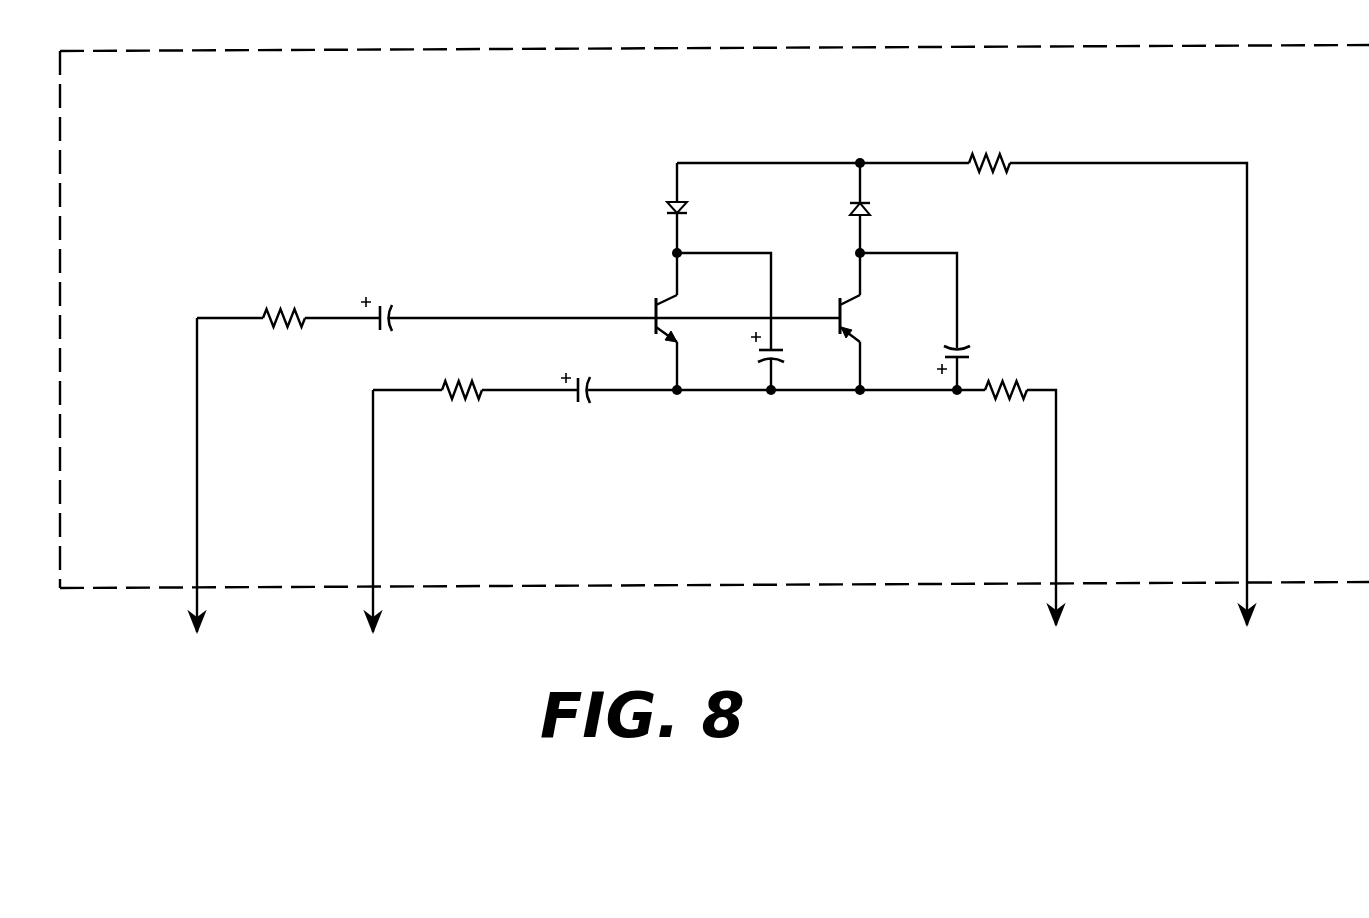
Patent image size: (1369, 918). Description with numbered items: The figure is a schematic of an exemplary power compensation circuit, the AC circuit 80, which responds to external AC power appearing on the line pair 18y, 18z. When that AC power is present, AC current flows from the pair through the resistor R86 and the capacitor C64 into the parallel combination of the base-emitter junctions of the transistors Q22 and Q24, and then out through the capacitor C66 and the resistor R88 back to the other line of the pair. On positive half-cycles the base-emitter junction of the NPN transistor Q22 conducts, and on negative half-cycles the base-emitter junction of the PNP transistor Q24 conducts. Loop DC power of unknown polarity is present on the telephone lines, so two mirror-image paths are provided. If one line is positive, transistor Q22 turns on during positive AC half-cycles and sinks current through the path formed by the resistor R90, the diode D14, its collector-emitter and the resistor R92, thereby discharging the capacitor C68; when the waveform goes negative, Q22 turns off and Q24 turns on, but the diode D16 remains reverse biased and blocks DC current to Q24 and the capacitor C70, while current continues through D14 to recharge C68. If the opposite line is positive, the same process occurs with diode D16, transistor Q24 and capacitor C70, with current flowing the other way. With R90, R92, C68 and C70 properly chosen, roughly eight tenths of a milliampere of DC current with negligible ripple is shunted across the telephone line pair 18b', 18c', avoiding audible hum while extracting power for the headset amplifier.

The AC circuit 80 is at (940, 47).
The diode D14 is at (665, 208).
The diode D16 is at (872, 207).
The NPN transistor Q22 is at (655, 300).
The PNP transistor Q24 is at (850, 316).
The resistor R86 is at (288, 329).
The resistor R88 is at (457, 380).
The resistor R90 is at (974, 153).
The resistor R92 is at (1016, 381).
The capacitor C64 is at (392, 311).
The capacitor C66 is at (590, 383).
The capacitor C68 is at (781, 359).
The capacitor C70 is at (968, 345).
The line of external AC power pair 18y is at (195, 654).
The line of external AC power pair 18z is at (372, 654).
The telephone line 18b' is at (1069, 649).
The telephone line 18c' is at (1248, 649).